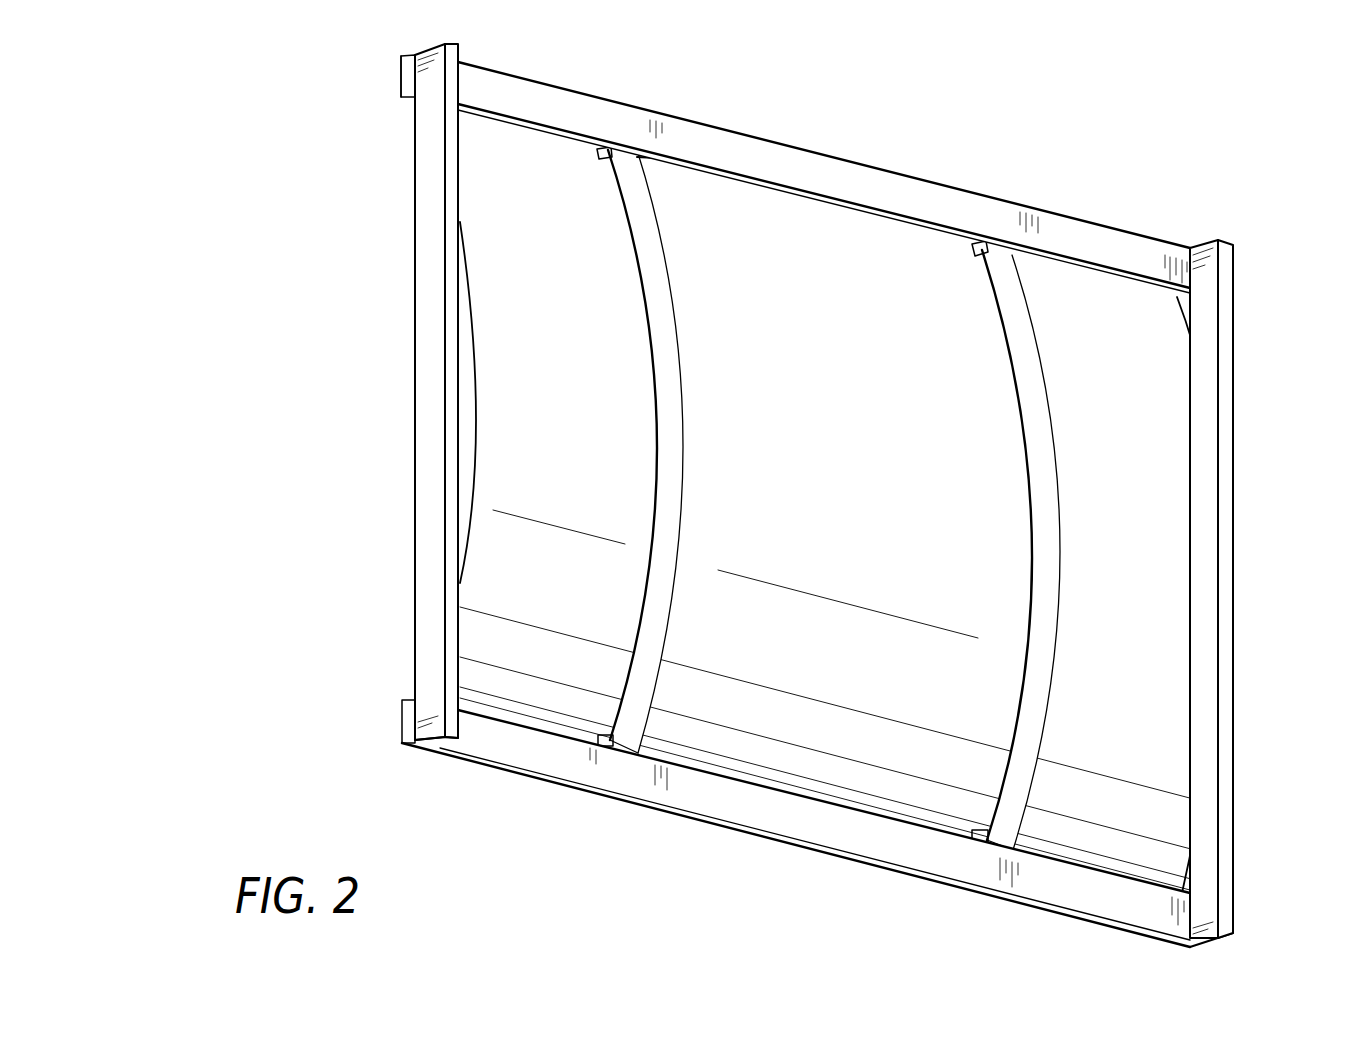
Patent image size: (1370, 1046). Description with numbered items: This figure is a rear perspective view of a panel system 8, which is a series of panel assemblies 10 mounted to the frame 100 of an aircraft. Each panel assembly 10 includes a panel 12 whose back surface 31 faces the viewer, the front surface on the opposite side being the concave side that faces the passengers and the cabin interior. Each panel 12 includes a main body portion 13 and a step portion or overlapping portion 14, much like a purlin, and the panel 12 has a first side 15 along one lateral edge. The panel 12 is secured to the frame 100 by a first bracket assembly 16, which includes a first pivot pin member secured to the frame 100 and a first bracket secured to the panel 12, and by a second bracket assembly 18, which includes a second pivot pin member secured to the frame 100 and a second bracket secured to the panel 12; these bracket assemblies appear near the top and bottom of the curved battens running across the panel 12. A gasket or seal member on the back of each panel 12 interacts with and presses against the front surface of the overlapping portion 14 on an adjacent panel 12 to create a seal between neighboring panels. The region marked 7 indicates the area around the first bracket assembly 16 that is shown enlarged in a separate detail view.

The detail view reference circle 7 is at (652, 202).
The panel system 8 is at (1200, 149).
The panel assembly 10 is at (920, 213).
The panel 12 is at (813, 227).
The main body portion 13 is at (820, 775).
The overlapping portion 14 is at (632, 727).
The first side 15 is at (1056, 571).
The first bracket assembly 16 is at (980, 236).
The second bracket assembly 18 is at (970, 847).
The back surface 31 is at (865, 549).
The frame 100 is at (1208, 293).